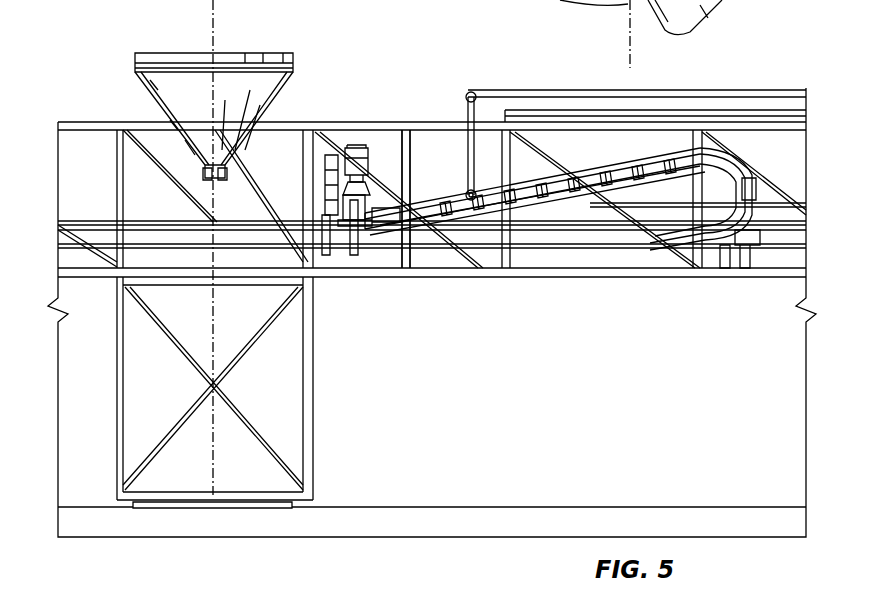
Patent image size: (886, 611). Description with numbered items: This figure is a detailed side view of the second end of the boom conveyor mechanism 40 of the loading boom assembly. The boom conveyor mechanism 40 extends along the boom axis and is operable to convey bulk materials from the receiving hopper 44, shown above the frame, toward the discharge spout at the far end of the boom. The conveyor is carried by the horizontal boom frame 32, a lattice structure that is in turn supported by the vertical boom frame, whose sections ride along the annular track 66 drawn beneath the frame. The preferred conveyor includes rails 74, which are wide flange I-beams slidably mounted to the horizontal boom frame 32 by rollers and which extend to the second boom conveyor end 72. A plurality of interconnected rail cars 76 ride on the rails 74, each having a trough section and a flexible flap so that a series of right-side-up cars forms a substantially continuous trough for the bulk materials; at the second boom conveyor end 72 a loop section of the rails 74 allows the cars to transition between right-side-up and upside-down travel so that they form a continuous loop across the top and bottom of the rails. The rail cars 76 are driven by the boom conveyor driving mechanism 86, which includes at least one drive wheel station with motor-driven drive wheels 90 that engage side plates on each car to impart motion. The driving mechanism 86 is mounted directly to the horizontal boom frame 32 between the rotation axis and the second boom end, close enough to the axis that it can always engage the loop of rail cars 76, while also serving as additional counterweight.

The horizontal boom frame 32 is at (412, 305).
The receiving hopper 44 is at (176, 80).
The boom conveyor driving mechanism 86 is at (352, 142).
The drive wheels 90 is at (330, 222).
The boom conveyor mechanism 40 is at (436, 142).
The rails 74 is at (608, 240).
The rail cars 76 is at (650, 156).
The second boom conveyor end 72 is at (692, 258).
The annular track 66 is at (303, 425).